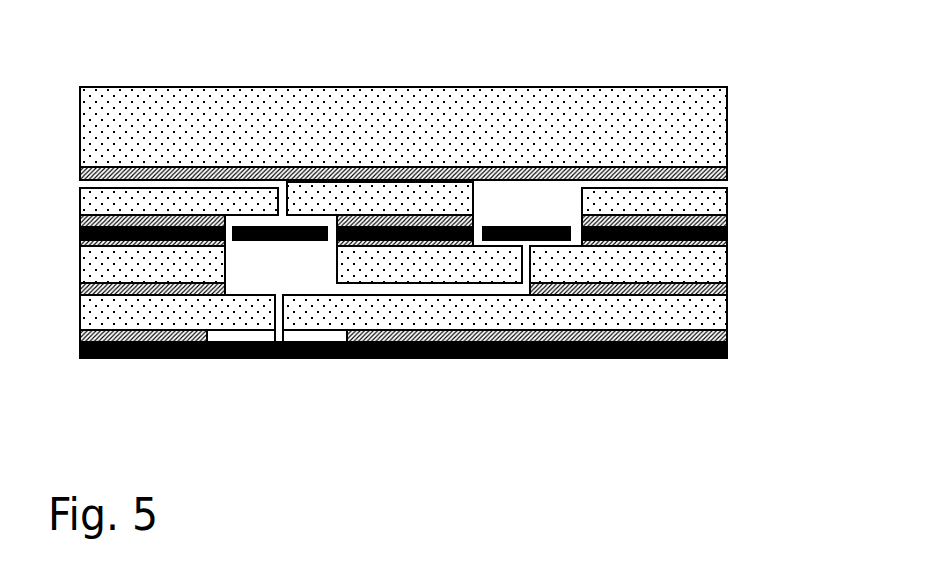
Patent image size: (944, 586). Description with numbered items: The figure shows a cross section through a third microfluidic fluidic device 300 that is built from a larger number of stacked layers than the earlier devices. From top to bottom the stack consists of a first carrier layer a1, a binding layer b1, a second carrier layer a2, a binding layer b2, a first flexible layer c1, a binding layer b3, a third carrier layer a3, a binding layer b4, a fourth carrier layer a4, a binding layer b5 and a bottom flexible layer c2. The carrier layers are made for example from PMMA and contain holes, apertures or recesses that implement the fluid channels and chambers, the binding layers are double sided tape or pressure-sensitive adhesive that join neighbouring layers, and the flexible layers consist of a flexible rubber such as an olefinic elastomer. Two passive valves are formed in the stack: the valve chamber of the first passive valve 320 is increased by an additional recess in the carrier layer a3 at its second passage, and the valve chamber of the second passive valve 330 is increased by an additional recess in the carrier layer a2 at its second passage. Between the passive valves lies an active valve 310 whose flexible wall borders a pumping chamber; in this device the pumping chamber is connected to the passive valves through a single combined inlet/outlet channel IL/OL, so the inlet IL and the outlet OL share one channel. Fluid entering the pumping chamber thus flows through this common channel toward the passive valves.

The fluidic device 300 is at (127, 62).
The carrier layer a1 is at (717, 127).
The binding layer b1 is at (727, 171).
The carrier layer a2 is at (718, 197).
The binding layer b2 is at (728, 221).
The flexible layer c1 is at (727, 232).
The binding layer b3 is at (727, 243).
The carrier layer a3 is at (718, 265).
The binding layer b4 is at (722, 292).
The carrier layer a4 is at (722, 318).
The binding layer b5 is at (727, 336).
The flexible layer c2 is at (727, 353).
The first passive valve 320 is at (252, 208).
The second passive valve 330 is at (542, 160).
The active valve 310 is at (334, 360).
The inlet IL is at (277, 369).
The outlet OL is at (279, 313).